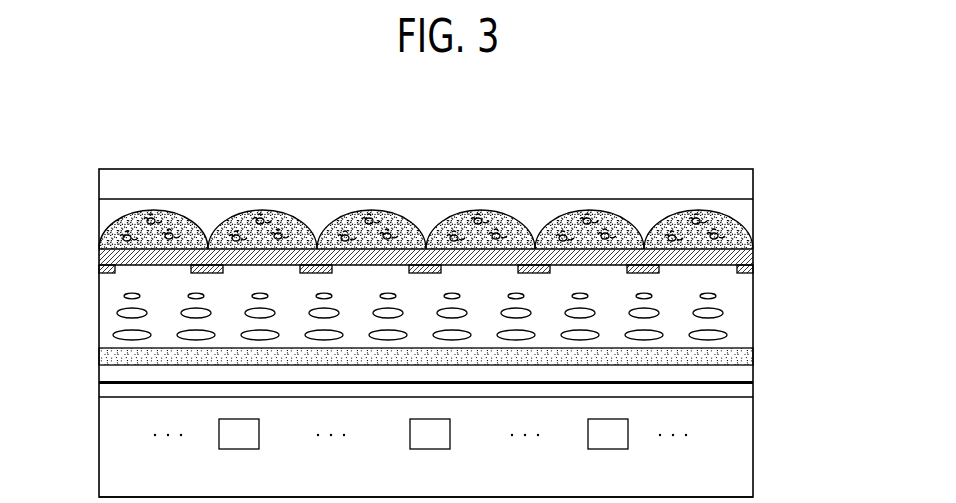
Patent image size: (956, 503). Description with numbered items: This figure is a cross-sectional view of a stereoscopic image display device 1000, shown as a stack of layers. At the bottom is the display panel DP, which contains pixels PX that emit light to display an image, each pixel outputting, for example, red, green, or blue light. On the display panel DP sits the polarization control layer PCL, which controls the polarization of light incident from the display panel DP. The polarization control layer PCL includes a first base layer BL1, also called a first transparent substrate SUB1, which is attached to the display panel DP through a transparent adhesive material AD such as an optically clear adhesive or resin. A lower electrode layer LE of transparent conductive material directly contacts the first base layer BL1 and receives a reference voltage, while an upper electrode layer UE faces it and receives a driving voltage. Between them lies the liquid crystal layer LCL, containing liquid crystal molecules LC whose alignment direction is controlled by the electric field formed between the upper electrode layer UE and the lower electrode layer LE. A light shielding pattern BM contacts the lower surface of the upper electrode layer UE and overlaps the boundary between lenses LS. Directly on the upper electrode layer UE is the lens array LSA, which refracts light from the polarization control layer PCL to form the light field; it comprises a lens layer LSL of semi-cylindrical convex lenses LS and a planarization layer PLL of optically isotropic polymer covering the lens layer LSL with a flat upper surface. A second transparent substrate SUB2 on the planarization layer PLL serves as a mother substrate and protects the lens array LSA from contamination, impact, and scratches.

The stereoscopic image display device 1000 is at (494, 135).
The second transparent substrate SUB2 is at (742, 189).
The lens array LSA is at (380, 189).
The planarization layer PLL is at (100, 210).
The lens layer LSL is at (100, 233).
The lens LS is at (185, 211).
The upper electrode layer UE is at (752, 262).
The light shielding pattern BM is at (186, 270).
The liquid crystal layer LCL is at (429, 315).
The liquid crystal molecule LC is at (115, 313).
The lower electrode layer LE is at (752, 352).
The polarization control layer PCL is at (458, 331).
The first base layer BL1 is at (745, 372).
The first transparent substrate SUB1 is at (459, 396).
The transparent adhesive material AD is at (105, 388).
The display panel DP is at (445, 458).
The pixel PX is at (420, 434).